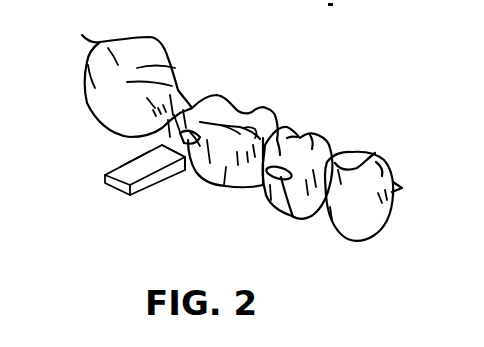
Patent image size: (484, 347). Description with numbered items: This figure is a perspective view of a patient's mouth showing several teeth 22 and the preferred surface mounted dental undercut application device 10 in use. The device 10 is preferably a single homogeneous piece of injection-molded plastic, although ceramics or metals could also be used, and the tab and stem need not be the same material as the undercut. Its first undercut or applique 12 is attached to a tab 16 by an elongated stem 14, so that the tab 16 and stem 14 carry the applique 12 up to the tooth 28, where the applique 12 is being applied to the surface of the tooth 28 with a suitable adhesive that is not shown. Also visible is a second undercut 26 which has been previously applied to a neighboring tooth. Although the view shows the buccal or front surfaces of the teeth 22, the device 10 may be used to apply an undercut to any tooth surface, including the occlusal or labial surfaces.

The surface mounted dental undercut application device 10 is at (100, 195).
The undercut or applique 12 is at (193, 107).
The elongated stem 14 is at (199, 177).
The tab 16 is at (131, 160).
The teeth 22 is at (378, 147).
The second undercut 26 is at (294, 219).
The tooth 28 is at (224, 187).